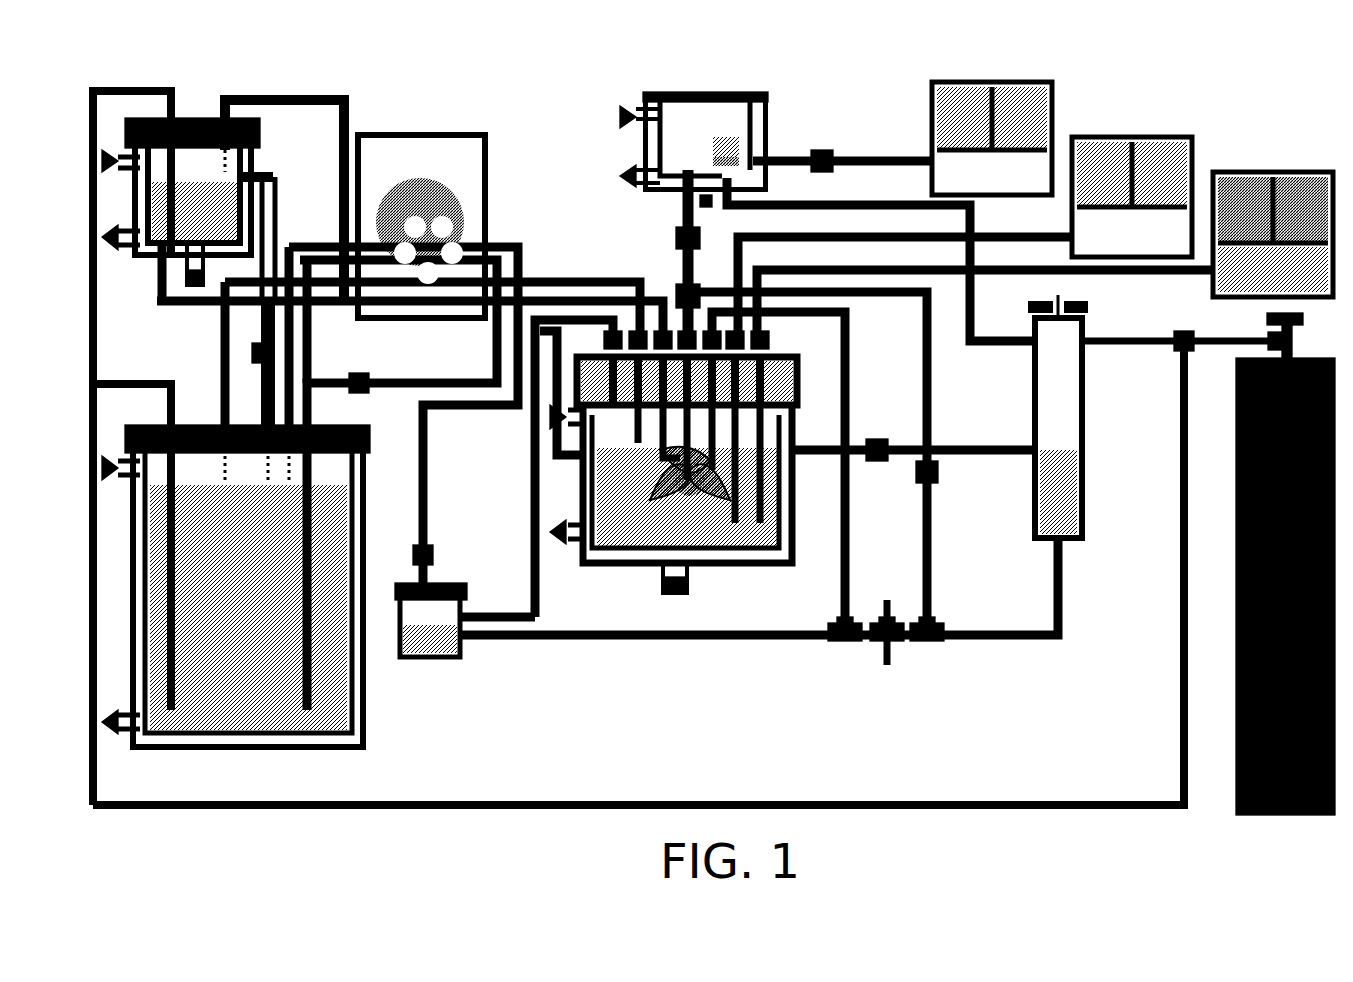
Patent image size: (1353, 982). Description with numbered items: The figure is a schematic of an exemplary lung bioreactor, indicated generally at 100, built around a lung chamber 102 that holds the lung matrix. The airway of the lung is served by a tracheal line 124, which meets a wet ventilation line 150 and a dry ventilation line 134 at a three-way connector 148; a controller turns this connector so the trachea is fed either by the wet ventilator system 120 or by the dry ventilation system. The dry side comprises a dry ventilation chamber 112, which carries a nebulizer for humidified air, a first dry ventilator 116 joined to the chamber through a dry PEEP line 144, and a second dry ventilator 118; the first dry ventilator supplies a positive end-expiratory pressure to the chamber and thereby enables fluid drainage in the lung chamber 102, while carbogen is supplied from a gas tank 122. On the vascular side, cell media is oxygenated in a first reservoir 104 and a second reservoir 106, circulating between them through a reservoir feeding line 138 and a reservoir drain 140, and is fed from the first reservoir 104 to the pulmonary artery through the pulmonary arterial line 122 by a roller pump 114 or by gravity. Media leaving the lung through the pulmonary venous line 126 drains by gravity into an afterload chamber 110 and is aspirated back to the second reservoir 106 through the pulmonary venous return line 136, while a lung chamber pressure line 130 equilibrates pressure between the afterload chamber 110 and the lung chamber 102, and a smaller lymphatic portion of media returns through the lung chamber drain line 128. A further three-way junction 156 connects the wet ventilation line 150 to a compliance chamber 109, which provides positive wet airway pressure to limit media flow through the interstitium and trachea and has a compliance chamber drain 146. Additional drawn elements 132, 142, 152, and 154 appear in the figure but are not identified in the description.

The system 100 is at (492, 91).
The lung chamber 102 is at (720, 345).
The first reservoir 104 is at (262, 126).
The second reservoir 106 is at (362, 424).
The compliance chamber 109 is at (1084, 520).
The afterload chamber 110 is at (468, 590).
The dry ventilation chamber 112 is at (771, 104).
The roller pump 114 is at (486, 145).
The first dry ventilator 116 is at (1054, 118).
The second dry ventilator 118 is at (1134, 137).
The wet ventilator system 120 is at (1278, 172).
The pulmonary arterial line 122 is at (1292, 336).
The tracheal line 124 is at (778, 425).
The pulmonary venous line 126 is at (732, 331).
The lung chamber drain line 128 is at (638, 331).
The lung chamber pressure line 130 is at (608, 332).
The head plate 132 is at (778, 358).
The dry ventilation line 134 is at (772, 338).
The pulmonary venous return line 136 is at (436, 553).
The reservoir feeding line 138 is at (364, 389).
The reservoir drain 140 is at (250, 352).
The valve 142 is at (1188, 330).
The dry PEEP line 144 is at (822, 150).
The compliance chamber drain 146 is at (878, 440).
The three-way connector 148 is at (676, 287).
The wet ventilation line 150 is at (666, 248).
The valve 152 is at (843, 650).
The valve 154 is at (892, 650).
The three-way junction 156 is at (928, 652).